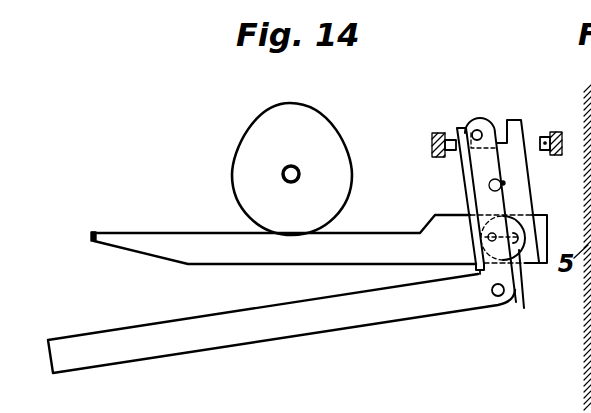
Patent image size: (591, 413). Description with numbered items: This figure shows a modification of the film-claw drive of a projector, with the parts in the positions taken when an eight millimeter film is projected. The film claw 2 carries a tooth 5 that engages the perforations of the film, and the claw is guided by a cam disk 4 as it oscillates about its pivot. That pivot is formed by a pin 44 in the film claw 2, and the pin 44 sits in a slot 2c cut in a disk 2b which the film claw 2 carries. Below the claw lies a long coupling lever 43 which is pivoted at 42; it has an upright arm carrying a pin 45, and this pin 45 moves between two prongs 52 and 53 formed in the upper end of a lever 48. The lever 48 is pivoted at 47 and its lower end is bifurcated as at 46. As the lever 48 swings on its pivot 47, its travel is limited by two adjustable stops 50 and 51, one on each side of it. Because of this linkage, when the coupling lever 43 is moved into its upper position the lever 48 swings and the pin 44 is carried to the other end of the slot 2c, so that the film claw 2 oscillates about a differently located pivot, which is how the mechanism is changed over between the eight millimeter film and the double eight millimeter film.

The film claw 2 is at (190, 245).
The disk 2b is at (521, 280).
The slot 2c is at (522, 252).
The cam disk 4 is at (252, 143).
The tooth 5 is at (93, 232).
The pivot 42 is at (498, 297).
The coupling lever 43 is at (282, 332).
The pin 44 is at (488, 237).
The pin 45 is at (478, 130).
The bifurcated end 46 is at (533, 230).
The pivot 47 is at (503, 183).
The lever 48 is at (523, 197).
The adjustable stop 50 is at (449, 151).
The adjustable stop 51 is at (545, 138).
The prong 52 is at (458, 127).
The prong 53 is at (517, 130).